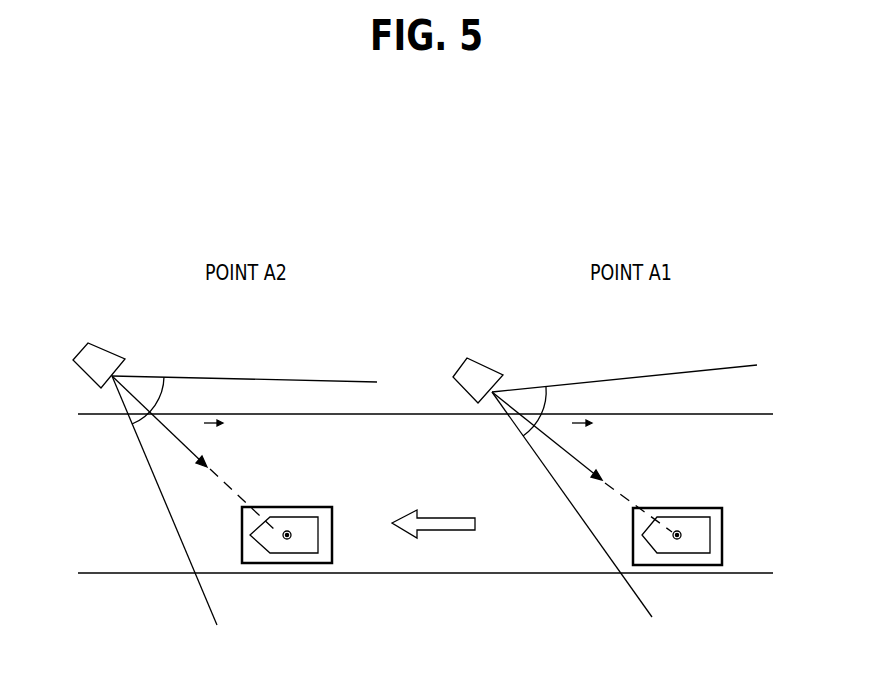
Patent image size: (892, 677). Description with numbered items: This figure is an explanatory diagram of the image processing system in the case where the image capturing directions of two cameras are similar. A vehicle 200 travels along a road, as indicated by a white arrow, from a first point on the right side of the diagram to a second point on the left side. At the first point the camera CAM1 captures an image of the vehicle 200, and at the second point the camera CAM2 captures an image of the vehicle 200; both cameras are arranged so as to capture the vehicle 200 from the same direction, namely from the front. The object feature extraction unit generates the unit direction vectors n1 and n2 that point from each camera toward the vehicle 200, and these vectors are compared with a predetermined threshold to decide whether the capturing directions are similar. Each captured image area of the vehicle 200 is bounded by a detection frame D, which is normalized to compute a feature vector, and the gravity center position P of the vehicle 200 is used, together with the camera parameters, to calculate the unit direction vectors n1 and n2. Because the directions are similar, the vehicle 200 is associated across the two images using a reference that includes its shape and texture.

The vehicle 200 is at (290, 516).
The detection frame D is at (302, 506).
The camera CAM1 is at (500, 349).
The camera CAM2 is at (118, 335).
The gravity center position P is at (491, 538).
The unit direction vector n1 is at (582, 437).
The unit direction vector n2 is at (214, 437).